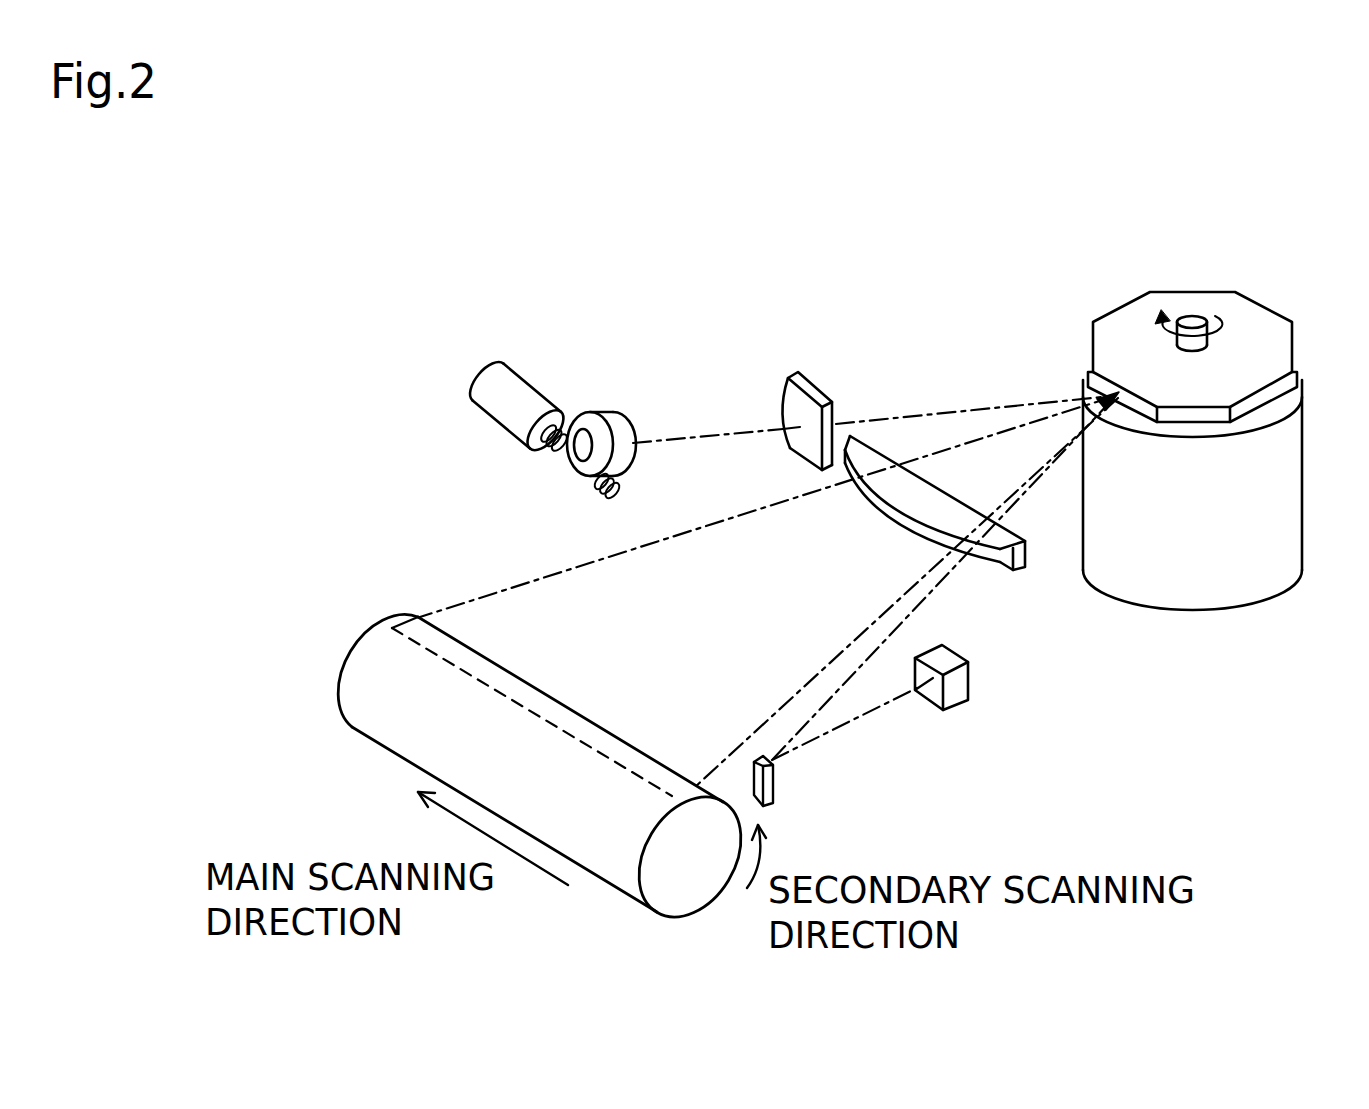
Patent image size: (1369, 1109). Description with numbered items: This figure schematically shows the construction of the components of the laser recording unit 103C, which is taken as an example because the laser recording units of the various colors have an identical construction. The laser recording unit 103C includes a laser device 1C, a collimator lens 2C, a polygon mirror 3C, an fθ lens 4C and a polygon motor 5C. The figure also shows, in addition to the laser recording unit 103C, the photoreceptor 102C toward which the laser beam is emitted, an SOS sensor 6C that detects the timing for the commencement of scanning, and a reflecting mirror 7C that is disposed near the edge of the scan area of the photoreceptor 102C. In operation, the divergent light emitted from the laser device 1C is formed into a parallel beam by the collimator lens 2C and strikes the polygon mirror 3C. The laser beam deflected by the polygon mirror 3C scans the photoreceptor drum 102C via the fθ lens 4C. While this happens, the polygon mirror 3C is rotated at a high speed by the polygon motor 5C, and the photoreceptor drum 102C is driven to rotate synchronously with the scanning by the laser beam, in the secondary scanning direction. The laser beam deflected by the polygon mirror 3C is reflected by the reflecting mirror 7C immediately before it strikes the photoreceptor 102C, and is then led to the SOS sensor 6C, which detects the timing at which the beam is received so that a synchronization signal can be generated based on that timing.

The laser recording unit 103C is at (928, 262).
The laser device 1C is at (606, 418).
The collimator lens 2C is at (808, 382).
The polygon mirror 3C is at (1129, 300).
The fθ lens 4C is at (912, 505).
The polygon motor 5C is at (1280, 490).
The SOS sensor 6C is at (968, 683).
The reflecting mirror 7C is at (775, 783).
The photoreceptor 102C is at (352, 650).